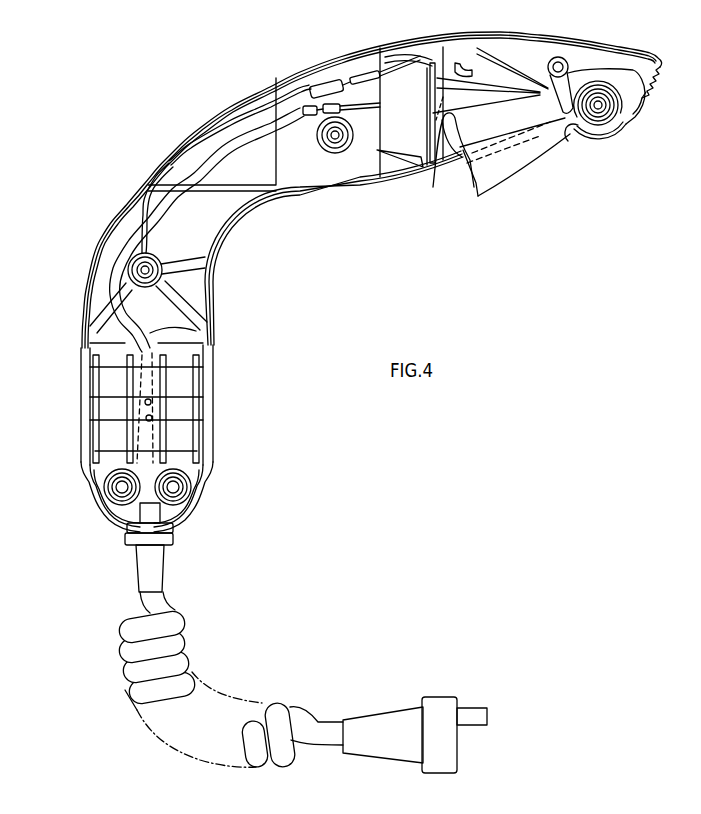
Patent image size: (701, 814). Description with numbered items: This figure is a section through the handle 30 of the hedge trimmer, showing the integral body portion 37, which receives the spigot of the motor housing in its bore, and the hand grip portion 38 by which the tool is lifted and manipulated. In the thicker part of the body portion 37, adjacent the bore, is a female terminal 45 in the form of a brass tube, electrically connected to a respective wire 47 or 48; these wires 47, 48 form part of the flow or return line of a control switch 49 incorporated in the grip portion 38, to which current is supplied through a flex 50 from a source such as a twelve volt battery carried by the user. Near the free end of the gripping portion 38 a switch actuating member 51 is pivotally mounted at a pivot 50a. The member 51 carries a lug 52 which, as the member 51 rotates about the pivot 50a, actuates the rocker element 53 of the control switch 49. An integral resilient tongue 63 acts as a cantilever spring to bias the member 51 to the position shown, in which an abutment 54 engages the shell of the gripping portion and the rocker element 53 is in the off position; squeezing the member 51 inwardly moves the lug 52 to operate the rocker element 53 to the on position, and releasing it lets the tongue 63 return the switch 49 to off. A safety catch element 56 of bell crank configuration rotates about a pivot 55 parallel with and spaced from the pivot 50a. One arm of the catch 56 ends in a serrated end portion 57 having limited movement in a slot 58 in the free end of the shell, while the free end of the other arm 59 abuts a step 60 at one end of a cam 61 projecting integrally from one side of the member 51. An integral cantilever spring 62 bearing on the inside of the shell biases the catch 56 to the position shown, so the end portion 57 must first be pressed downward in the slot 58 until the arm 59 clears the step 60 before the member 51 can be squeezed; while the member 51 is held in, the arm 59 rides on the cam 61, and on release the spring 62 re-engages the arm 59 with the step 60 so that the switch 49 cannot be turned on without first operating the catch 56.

The handle 30 is at (111, 204).
The body portion 37 is at (84, 383).
The hand grip portion 38 is at (164, 162).
The female terminal 45 is at (192, 403).
The wire 47 is at (152, 440).
The wire 48 is at (152, 329).
The control switch 49 is at (547, 171).
The flex 50 is at (176, 627).
The pivot 50a is at (605, 110).
The switch actuating member 51 is at (510, 163).
The lug 52 is at (435, 174).
The rocker element 53 is at (442, 97).
The abutment 54 is at (472, 181).
The pivot 55 is at (559, 57).
The safety catch element 56 is at (600, 64).
The end portion 57 is at (659, 68).
The slot 58 is at (642, 101).
The arm 59 is at (563, 105).
The step 60 is at (560, 125).
The cam 61 is at (580, 124).
The cantilever spring 62 is at (513, 60).
The resilient tongue 63 is at (488, 88).